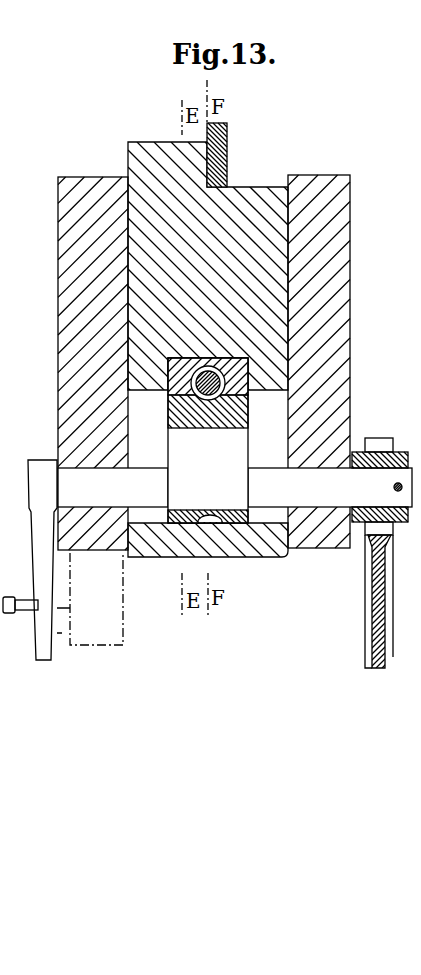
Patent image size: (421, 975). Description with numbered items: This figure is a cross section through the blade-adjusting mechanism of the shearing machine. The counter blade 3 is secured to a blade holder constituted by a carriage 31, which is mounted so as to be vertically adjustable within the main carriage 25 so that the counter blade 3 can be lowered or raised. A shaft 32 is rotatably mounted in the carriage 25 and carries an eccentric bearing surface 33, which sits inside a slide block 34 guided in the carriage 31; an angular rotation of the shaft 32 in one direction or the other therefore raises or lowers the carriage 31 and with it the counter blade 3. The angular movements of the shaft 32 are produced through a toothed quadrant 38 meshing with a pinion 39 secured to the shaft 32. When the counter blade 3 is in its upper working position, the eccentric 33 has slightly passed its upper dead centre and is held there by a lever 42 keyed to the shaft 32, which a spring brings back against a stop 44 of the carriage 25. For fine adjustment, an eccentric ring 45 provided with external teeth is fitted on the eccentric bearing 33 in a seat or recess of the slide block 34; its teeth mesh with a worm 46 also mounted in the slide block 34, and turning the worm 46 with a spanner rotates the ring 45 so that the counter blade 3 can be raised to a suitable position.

The counter blade 3 is at (216, 153).
The carriage 25 is at (73, 358).
The carriage 31 is at (248, 200).
The shaft 32 is at (235, 487).
The eccentric bearing surface 33 is at (208, 440).
The slide block 34 is at (240, 375).
The toothed quadrant 38 is at (372, 548).
The pinion 39 is at (378, 445).
The lever 42 is at (40, 565).
The stop 44 is at (62, 633).
The eccentric ring 45 is at (240, 422).
The worm 46 is at (202, 382).